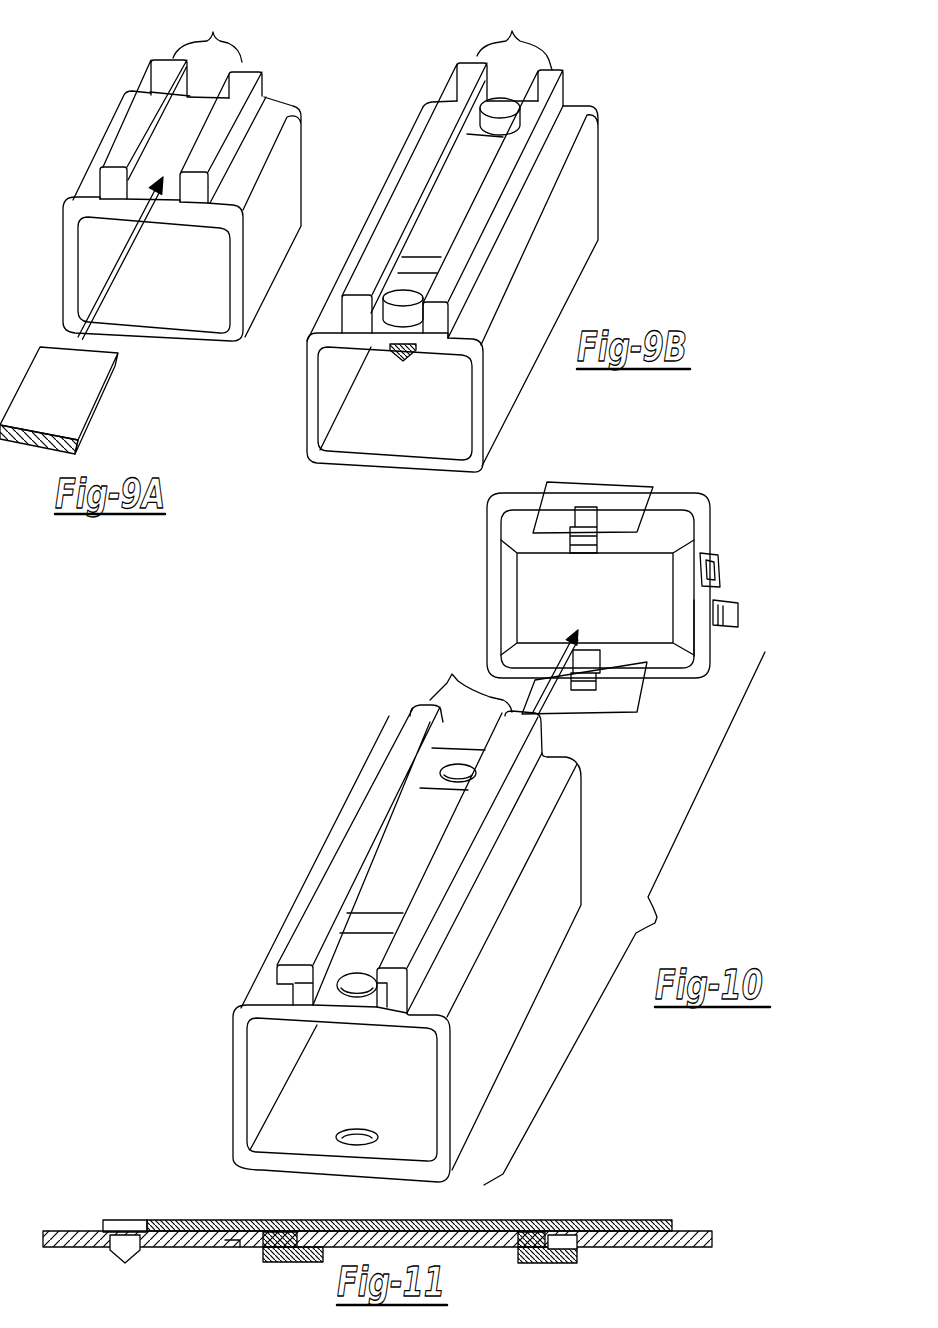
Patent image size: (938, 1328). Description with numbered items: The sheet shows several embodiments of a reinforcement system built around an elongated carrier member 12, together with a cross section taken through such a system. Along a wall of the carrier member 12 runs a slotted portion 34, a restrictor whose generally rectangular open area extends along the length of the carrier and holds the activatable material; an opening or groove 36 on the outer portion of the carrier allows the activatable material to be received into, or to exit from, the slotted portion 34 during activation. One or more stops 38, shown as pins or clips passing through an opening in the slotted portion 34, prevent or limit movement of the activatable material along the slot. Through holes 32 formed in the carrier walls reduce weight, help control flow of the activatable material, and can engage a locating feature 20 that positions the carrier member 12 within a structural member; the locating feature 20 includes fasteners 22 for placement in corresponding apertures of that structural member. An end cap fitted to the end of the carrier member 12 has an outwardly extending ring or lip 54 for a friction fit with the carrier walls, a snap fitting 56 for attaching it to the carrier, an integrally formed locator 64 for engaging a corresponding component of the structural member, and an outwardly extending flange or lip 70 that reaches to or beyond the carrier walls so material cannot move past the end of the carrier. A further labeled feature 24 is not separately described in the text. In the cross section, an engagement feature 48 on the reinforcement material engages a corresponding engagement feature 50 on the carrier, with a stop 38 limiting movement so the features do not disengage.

In FIG. 9A, the carrier member 12 is at (291, 178).
In FIG. 9B, the carrier member 12 is at (590, 184).
In FIG. 10, the carrier member 12 is at (233, 1087).
In FIG. 11, the carrier member 12 is at (675, 1250).
In FIG. 10, the locating feature 20 is at (631, 580).
In FIG. 10, the fasteners 22 is at (738, 620).
In FIG. 9A, the channel 24 is at (207, 54).
In FIG. 9B, the channel 24 is at (514, 57).
In FIG. 10, the channel 24 is at (426, 789).
In FIG. 11, the channel 24 is at (484, 1240).
In FIG. 10, the through holes 32 is at (352, 1133).
In FIG. 9A, the slotted portion 34 is at (100, 187).
In FIG. 9B, the slotted portion 34 is at (342, 313).
In FIG. 10, the slotted portion 34 is at (277, 983).
In FIG. 9A, the groove 36 is at (181, 124).
In FIG. 9B, the groove 36 is at (390, 286).
In FIG. 9B, the stops 38 is at (410, 301).
In FIG. 11, the stops 38 is at (118, 1220).
In FIG. 11, the engagement features 48 is at (290, 1262).
In FIG. 11, the engagement features 50 is at (230, 1241).
In FIG. 10, the outwardly extending ring or lip 54 is at (683, 667).
In FIG. 10, the snap fitting 56 is at (572, 553).
In FIG. 10, the locator 64 is at (720, 575).
In FIG. 10, the outwardly extending flange or lip 70 is at (660, 507).